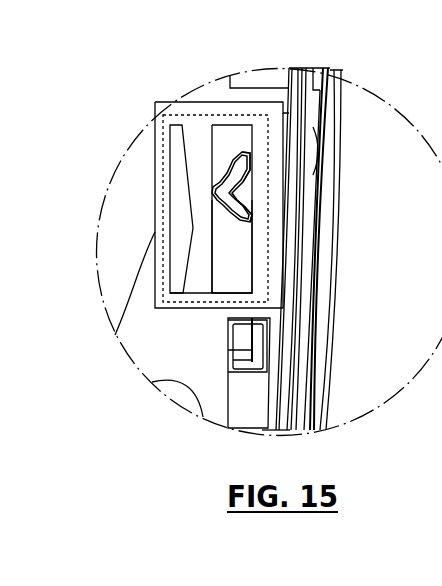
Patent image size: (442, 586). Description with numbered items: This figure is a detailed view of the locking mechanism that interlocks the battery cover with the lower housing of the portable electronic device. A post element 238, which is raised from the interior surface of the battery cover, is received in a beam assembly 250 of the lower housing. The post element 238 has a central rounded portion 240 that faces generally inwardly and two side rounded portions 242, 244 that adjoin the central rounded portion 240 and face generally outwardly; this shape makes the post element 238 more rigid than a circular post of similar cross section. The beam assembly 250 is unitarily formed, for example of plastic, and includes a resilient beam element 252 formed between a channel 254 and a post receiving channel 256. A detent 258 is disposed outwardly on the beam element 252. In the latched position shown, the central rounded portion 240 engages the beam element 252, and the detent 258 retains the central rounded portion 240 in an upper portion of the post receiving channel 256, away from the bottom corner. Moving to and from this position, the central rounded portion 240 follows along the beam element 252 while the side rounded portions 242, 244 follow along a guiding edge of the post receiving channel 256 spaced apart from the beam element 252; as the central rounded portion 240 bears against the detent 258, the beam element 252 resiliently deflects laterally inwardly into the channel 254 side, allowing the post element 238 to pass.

The post element 238 is at (229, 155).
The central rounded portion 240 is at (214, 190).
The side rounded portion 242 is at (250, 205).
The side rounded portion 244 is at (252, 168).
The beam assembly 250 is at (275, 140).
The beam element 252 is at (200, 277).
The channel 254 is at (177, 228).
The post receiving channel 256 is at (235, 260).
The detent 258 is at (208, 213).